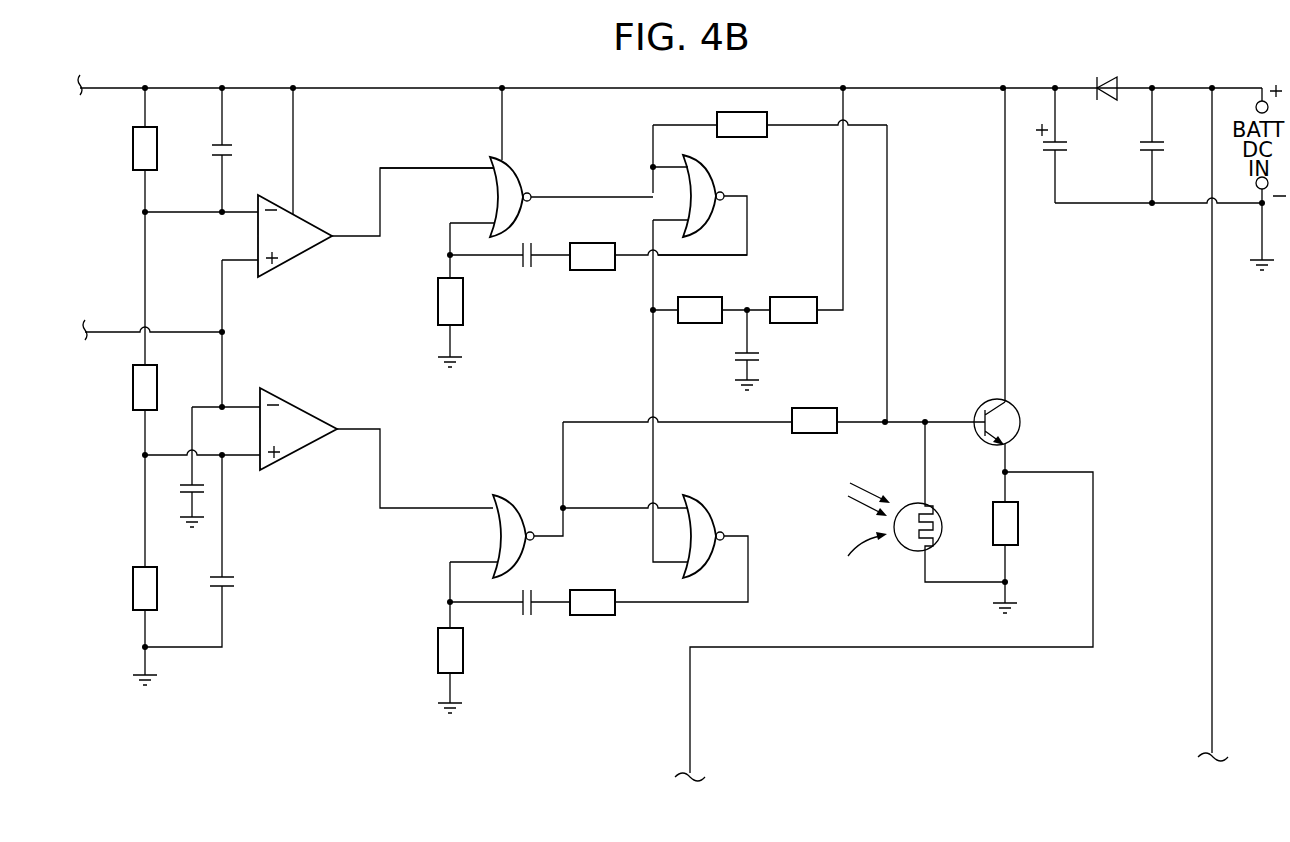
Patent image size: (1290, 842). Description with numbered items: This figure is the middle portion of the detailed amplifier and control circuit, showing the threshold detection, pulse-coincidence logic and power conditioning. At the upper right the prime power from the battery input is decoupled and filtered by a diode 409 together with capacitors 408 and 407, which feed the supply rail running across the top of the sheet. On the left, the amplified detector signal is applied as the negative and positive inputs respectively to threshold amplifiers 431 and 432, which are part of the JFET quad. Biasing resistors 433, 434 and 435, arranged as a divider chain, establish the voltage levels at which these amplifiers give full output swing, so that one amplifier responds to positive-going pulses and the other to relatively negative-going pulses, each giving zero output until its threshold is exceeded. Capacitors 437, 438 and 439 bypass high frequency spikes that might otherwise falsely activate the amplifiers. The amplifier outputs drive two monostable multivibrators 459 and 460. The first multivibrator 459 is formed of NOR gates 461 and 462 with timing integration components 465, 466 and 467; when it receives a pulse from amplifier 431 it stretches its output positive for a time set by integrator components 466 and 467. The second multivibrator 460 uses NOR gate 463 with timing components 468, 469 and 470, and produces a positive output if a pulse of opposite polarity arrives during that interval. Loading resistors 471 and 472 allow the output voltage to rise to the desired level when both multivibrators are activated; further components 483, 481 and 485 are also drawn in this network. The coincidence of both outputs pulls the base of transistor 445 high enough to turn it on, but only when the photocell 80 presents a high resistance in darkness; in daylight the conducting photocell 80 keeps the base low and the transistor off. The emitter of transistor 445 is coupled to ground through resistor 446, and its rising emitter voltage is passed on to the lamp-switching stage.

The biasing resistor 433 is at (133, 136).
The capacitor 437 is at (212, 150).
The amplifier 431 is at (316, 243).
The biasing resistor 434 is at (133, 378).
The capacitor 438 is at (178, 489).
The amplifier 432 is at (292, 402).
The capacitor 439 is at (240, 581).
The biasing resistor 435 is at (133, 598).
The monostable multivibrator 459 is at (670, 148).
The NOR gate 461 is at (503, 198).
The timing integration component 466 is at (437, 292).
The timing integration component 467 is at (529, 269).
The timing integration component 465 is at (614, 270).
The NOR gate 462 is at (706, 220).
The loading resistor 472 is at (743, 138).
The 4.7K resistor 483 is at (680, 323).
The 330K resistor 481 is at (802, 323).
The 33K capacitor 485 is at (761, 357).
The loading resistor 471 is at (813, 436).
The monostable multivibrator 460 is at (675, 486).
The NOR gate 463 is at (505, 538).
The timing integration component 469 is at (702, 503).
The timing integration component 470 is at (530, 613).
The timing integration component 468 is at (588, 616).
The photocell 80 is at (914, 497).
The transistor 445 is at (1020, 414).
The resistor 446 is at (1020, 527).
The diode 409 is at (1117, 81).
The capacitor 408 is at (1043, 146).
The capacitor 407 is at (1138, 146).